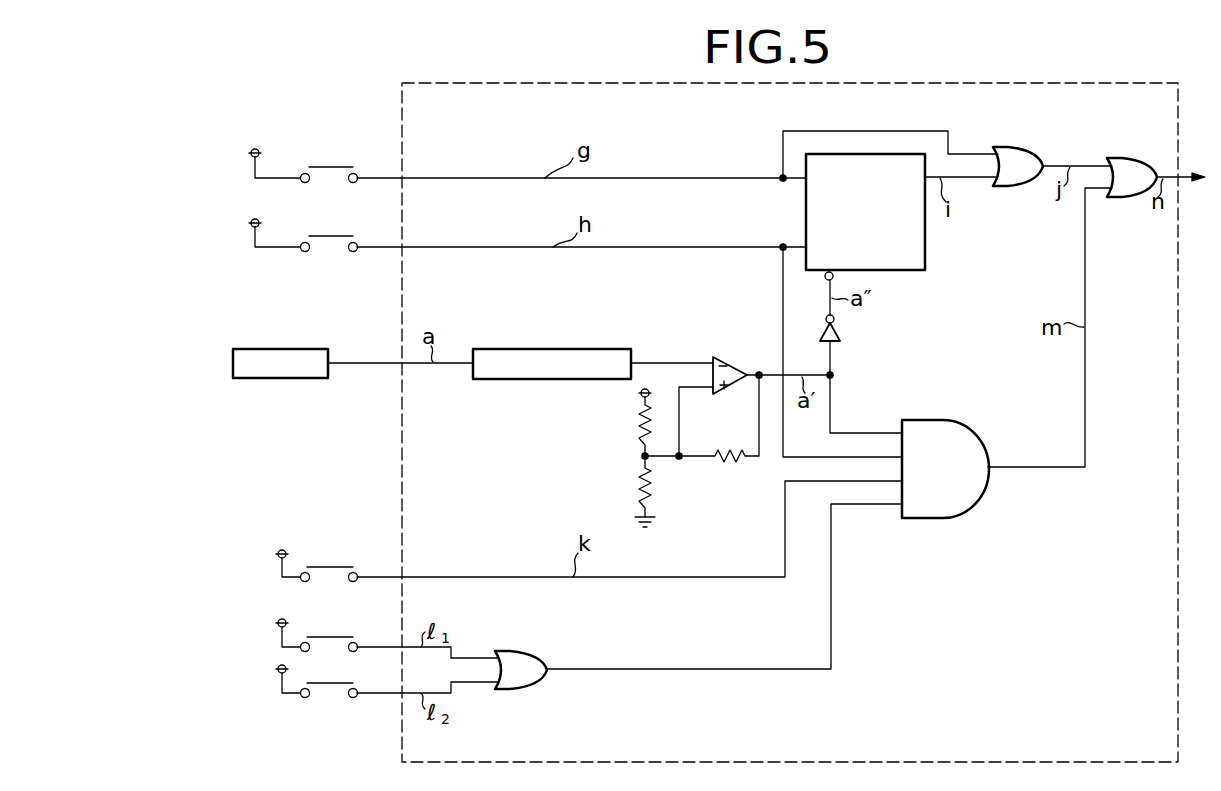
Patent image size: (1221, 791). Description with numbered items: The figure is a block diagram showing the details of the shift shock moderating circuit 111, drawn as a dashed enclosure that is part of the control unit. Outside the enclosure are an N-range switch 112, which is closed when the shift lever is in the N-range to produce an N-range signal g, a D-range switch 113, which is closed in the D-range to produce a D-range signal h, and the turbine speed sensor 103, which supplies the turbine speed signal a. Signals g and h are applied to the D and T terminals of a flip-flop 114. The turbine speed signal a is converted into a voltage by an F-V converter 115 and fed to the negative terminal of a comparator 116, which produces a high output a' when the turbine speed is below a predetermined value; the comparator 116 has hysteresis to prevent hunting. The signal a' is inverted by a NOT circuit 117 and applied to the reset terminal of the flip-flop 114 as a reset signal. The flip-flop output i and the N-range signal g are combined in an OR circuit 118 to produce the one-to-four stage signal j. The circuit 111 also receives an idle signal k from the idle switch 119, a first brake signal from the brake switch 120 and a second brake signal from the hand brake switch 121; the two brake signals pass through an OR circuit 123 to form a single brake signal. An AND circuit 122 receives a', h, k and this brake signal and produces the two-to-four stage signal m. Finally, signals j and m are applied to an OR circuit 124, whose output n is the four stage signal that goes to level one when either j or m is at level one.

The turbine speed sensor 103 is at (285, 349).
The shift shock moderating circuit 111 is at (1065, 83).
The N-range switch 112 is at (336, 167).
The D-range switch 113 is at (336, 236).
The flip-flop 114 is at (928, 252).
The F-V converter 115 is at (555, 349).
The comparator 116 is at (737, 361).
The NOT circuit 117 is at (843, 332).
The OR circuit 118 is at (1016, 147).
The idle switch 119 is at (324, 567).
The brake switch 120 is at (324, 637).
The hand brake switch 121 is at (324, 683).
The AND circuit 122 is at (962, 422).
The OR circuit 123 is at (530, 652).
The OR circuit 124 is at (1118, 200).